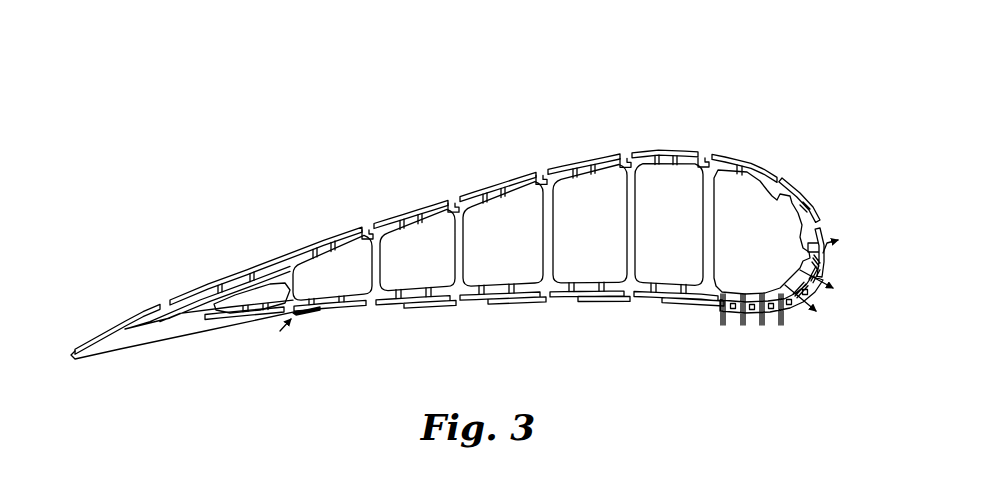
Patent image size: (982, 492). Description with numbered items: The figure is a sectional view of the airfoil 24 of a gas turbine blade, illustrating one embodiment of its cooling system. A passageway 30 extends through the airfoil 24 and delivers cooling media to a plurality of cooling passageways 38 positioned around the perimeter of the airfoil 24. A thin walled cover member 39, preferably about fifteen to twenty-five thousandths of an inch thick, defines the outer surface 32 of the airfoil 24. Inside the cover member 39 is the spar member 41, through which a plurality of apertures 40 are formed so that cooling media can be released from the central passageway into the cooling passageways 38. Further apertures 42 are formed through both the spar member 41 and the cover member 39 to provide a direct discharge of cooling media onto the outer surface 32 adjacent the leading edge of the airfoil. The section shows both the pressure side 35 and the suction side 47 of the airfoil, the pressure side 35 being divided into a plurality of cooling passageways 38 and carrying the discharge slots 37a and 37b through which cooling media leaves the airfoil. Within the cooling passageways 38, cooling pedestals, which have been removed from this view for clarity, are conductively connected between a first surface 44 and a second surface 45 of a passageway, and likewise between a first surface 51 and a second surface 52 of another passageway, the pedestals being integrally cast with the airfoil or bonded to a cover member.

The airfoil 24 is at (702, 56).
The passageway 30 is at (577, 236).
The outer surface 32 is at (565, 160).
The pressure side 35 is at (210, 333).
The discharge slot 37a is at (370, 323).
The discharge slot 37b is at (450, 305).
The cooling passageway 38 is at (637, 150).
The cover member 39 is at (758, 164).
The apertures 40 is at (333, 250).
The spar member 41 is at (713, 175).
The apertures 42 is at (725, 322).
The first surface 44 is at (390, 290).
The second surface 45 is at (402, 307).
The suction side 47 is at (307, 245).
The first surface 51 is at (443, 207).
The second surface 52 is at (505, 190).